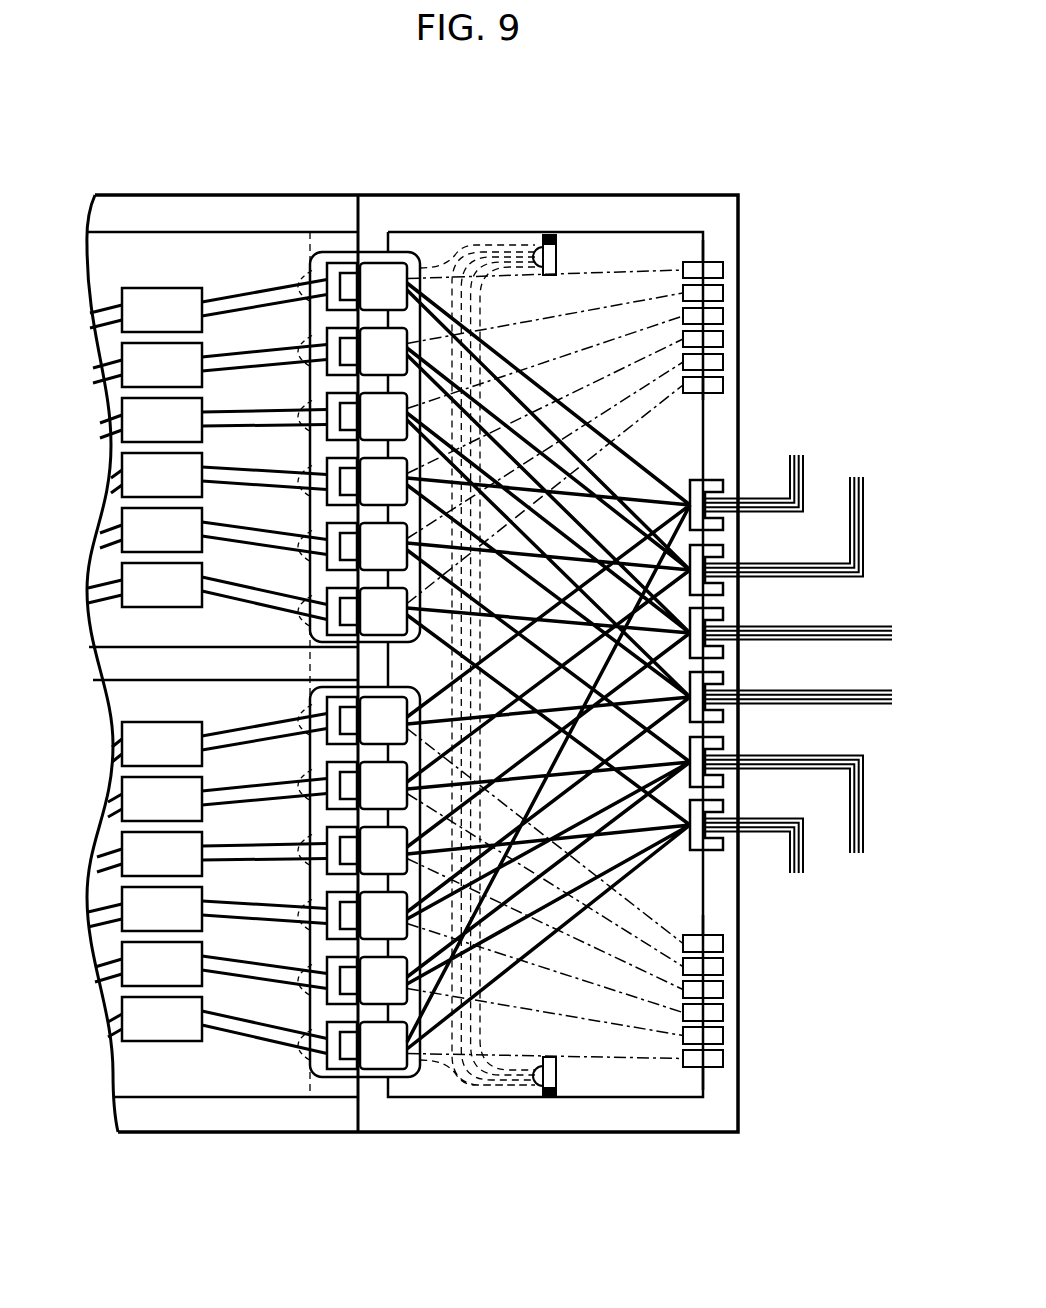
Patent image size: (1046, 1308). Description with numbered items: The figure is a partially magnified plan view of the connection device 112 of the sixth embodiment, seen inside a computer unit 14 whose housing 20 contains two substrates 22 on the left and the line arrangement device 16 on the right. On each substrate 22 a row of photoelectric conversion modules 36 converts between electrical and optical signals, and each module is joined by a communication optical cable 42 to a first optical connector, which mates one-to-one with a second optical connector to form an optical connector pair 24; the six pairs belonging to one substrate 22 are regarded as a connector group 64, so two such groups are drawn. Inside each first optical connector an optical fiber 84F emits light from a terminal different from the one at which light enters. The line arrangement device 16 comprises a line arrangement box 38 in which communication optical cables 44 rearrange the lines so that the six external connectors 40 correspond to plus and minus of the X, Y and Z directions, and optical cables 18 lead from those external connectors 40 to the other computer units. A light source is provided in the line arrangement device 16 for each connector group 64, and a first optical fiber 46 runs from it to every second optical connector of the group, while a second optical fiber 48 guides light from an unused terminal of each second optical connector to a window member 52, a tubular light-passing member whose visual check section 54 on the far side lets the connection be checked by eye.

The computer unit 14 is at (129, 1157).
The line arrangement device 16 is at (588, 1141).
The optical cable 18 is at (855, 491).
The housing 20 is at (195, 1141).
The substrate 22 is at (125, 223).
The optical connector pair 24 is at (352, 249).
The photoelectric conversion module 36 is at (140, 288).
The line arrangement box 38 is at (678, 1106).
The external connector 40 is at (718, 481).
The communication optical cable 42 is at (262, 296).
The communication optical cable 44 is at (645, 470).
The first optical fiber 46 is at (527, 243).
The second optical fiber 48 is at (625, 272).
The window member 52 is at (713, 262).
The visual check section 54 is at (723, 272).
The connector group 64 is at (420, 255).
The optical fiber 84F is at (293, 270).
The connection device 112 is at (471, 139).